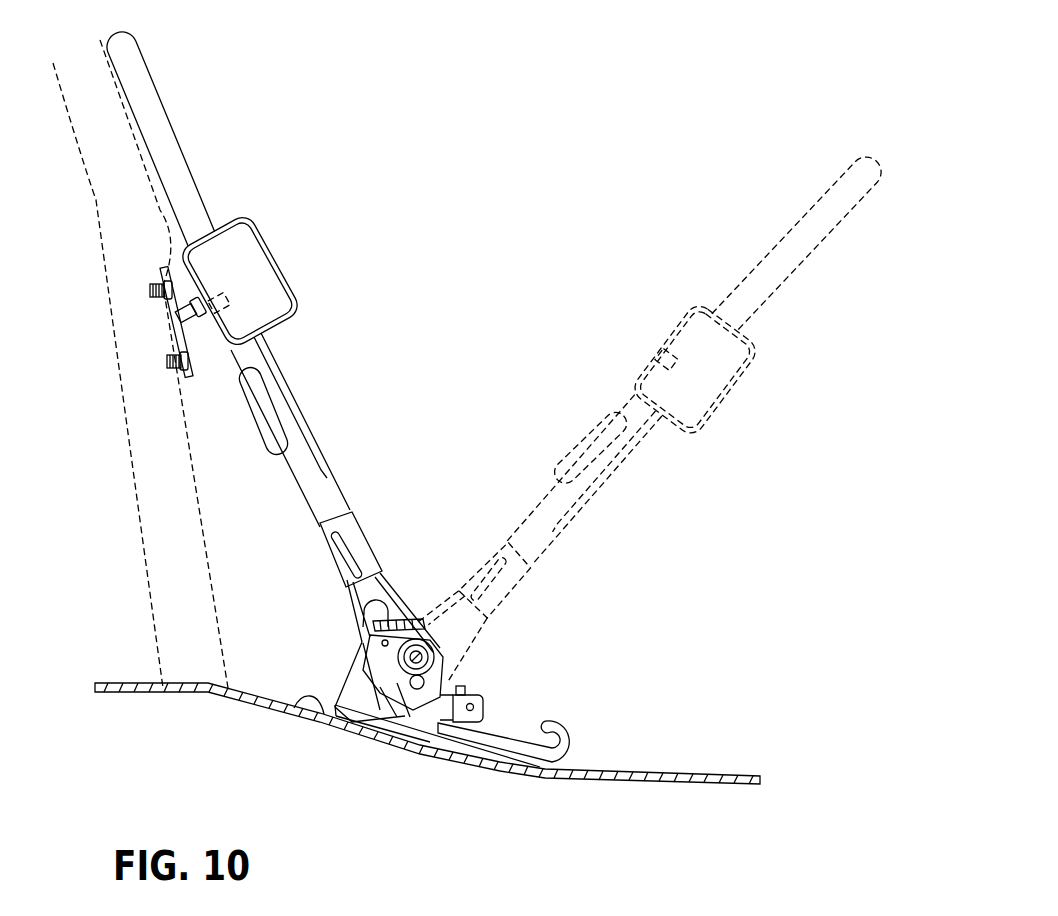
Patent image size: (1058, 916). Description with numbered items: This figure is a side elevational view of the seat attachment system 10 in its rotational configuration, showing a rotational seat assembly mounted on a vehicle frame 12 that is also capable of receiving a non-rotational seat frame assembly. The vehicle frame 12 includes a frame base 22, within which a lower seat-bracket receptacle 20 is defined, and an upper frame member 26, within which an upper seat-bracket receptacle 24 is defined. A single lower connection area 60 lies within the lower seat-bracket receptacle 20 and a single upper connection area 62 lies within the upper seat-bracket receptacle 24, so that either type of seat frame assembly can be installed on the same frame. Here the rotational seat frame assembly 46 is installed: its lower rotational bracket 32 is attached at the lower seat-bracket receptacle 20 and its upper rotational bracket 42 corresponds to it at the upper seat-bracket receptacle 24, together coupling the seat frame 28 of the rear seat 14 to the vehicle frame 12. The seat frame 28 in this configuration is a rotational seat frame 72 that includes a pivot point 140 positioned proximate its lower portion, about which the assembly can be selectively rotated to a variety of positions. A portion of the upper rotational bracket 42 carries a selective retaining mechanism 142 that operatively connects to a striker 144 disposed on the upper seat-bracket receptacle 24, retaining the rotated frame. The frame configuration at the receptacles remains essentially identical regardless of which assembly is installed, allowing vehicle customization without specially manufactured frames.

The seat attachment system 10 is at (349, 430).
The vehicle frame 12 is at (175, 700).
The rear seat 14 is at (292, 377).
The lower seat-bracket receptacle 20 is at (297, 702).
The frame base 22 is at (610, 778).
The upper seat-bracket receptacle 24 is at (165, 216).
The upper frame member 26 is at (128, 232).
The seat frame 28 is at (177, 133).
The lower rotational bracket 32 is at (431, 718).
The upper rotational bracket 42 is at (173, 337).
The rotational seat frame assembly 46 is at (392, 397).
The lower connection area 60 is at (340, 724).
The upper connection area 62 is at (170, 372).
The rotational seat frame 72 is at (373, 510).
The pivot point 140 is at (427, 652).
The selective retaining mechanism 142 is at (243, 237).
The striker 144 is at (200, 288).